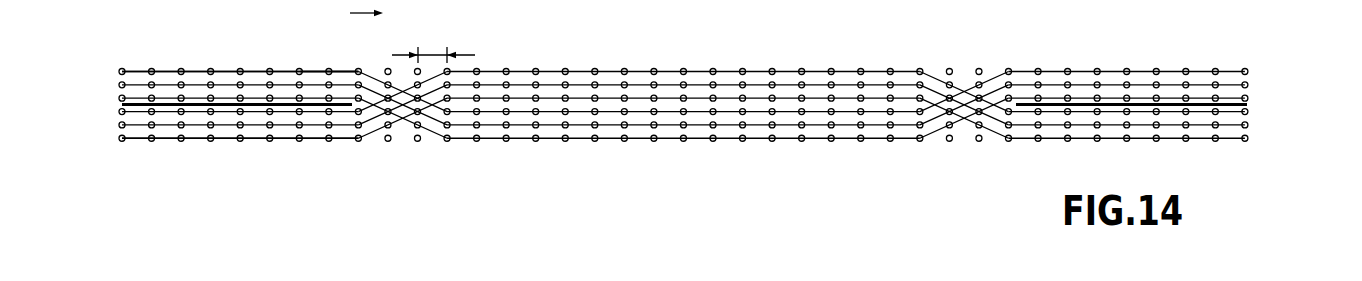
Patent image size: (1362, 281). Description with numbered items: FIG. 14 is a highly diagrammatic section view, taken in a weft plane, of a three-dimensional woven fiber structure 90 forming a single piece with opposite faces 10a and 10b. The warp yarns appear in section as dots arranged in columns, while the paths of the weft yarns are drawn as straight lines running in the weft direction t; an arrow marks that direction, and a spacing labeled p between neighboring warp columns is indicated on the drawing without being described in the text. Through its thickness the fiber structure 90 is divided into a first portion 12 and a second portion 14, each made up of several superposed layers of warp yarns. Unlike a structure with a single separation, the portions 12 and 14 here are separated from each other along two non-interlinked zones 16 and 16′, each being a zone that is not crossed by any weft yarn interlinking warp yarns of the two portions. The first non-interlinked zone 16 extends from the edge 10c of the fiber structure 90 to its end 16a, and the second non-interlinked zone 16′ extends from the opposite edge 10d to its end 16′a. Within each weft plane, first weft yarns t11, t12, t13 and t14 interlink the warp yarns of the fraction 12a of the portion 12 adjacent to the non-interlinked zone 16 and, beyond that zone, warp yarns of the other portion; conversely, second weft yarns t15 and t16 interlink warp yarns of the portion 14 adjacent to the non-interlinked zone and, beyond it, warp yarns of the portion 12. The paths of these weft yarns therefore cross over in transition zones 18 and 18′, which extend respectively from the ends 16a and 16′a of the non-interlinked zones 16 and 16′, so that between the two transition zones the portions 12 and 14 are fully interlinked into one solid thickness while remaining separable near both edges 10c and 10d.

The face 10a is at (283, 64).
The face 10b is at (269, 153).
The edge 10c is at (106, 119).
The edge 10d is at (1263, 109).
The first portion 12 is at (703, 68).
The fraction of the first portion 12a is at (312, 77).
The second portion 14 is at (703, 109).
The non-interlinked zone 16 is at (132, 103).
The end of the non-interlinked zone 16a is at (352, 103).
The non-interlinked zone 16′ is at (1142, 102).
The end of the non-interlinked zone 16′a is at (1017, 102).
The transition zone 18 is at (448, 157).
The transition zone 18′ is at (1016, 157).
The 3D woven fiber structure 90 is at (527, 45).
The first weft yarn t11 is at (134, 68).
The first weft yarn t12 is at (169, 82).
The first weft yarn t13 is at (198, 96).
The first weft yarn t14 is at (233, 110).
The second weft yarn t15 is at (250, 127).
The second weft yarn t16 is at (222, 141).
The pitch p is at (433, 47).
The weft direction t is at (366, 8).